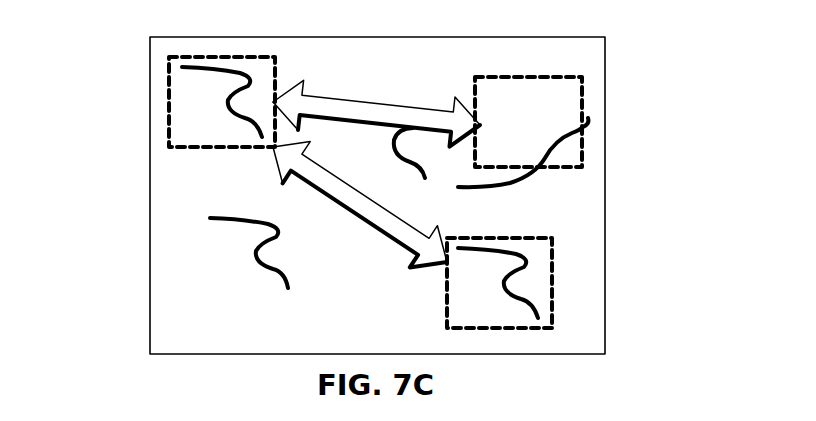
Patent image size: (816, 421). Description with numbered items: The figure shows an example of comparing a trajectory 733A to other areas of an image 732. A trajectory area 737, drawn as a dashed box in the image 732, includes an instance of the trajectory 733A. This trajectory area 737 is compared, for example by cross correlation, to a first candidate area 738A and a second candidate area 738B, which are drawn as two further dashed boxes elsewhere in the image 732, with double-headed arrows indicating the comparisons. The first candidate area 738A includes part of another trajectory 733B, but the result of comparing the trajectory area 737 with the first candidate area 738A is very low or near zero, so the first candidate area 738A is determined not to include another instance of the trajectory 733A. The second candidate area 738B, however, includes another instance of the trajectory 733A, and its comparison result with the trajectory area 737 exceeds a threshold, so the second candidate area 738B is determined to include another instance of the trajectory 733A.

The image 732 is at (150, 85).
The trajectory 733A is at (219, 104).
The another trajectory 733B is at (563, 150).
The trajectory area 737 is at (277, 58).
The first candidate area 738A is at (582, 98).
The second candidate area 738B is at (552, 278).